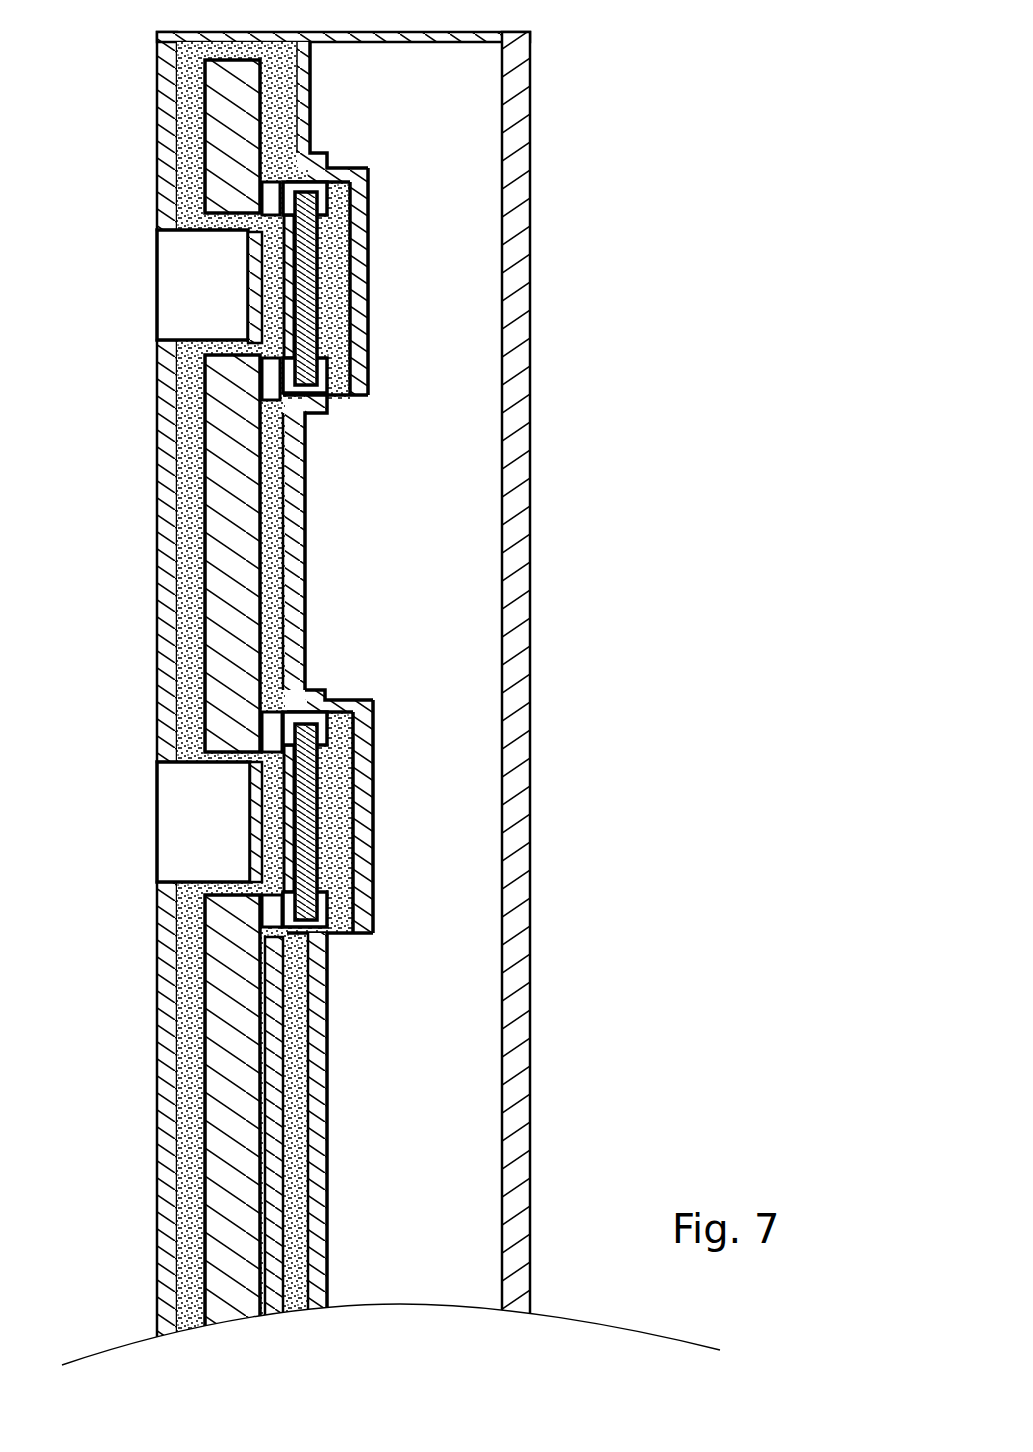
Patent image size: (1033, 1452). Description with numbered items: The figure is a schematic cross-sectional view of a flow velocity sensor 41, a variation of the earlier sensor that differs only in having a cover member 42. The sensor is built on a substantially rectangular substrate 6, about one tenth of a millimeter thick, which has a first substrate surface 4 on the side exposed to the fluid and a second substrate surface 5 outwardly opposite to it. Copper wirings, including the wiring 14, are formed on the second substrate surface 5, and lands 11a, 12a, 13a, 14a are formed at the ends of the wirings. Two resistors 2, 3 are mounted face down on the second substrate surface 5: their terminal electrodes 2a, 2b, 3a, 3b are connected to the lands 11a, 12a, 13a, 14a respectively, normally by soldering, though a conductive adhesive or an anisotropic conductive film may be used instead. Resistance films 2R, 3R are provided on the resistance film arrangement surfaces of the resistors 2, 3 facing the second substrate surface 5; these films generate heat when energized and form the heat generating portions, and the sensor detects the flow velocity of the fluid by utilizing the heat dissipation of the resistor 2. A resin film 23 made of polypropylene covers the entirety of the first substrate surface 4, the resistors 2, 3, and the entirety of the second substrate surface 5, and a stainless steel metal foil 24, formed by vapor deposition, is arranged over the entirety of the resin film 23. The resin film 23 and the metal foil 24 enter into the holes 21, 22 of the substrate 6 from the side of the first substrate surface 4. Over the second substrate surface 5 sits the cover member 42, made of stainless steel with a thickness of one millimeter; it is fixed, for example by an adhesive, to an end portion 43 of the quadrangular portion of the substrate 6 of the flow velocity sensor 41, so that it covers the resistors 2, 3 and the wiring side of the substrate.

The resistor 2 is at (364, 293).
The resistance film 2R is at (321, 249).
The terminal electrode 2a is at (371, 190).
The terminal electrode 2b is at (327, 368).
The resistor 3 is at (364, 826).
The resistance film 3R is at (327, 813).
The terminal electrode 3a is at (372, 736).
The terminal electrode 3b is at (328, 898).
The first substrate surface 4 is at (157, 527).
The second substrate surface 5 is at (283, 471).
The substrate 6 is at (158, 96).
The land 11a is at (371, 175).
The land 12a is at (371, 396).
The land 13a is at (372, 706).
The land 14a is at (372, 934).
The wiring 14 is at (332, 1133).
The hole 21 is at (220, 296).
The hole 22 is at (220, 831).
The resin film 23 is at (282, 117).
The metal foil 24 is at (318, 74).
The flow velocity sensor 41 is at (740, 128).
The cover member 42 is at (517, 132).
The end portion 43 is at (250, 33).